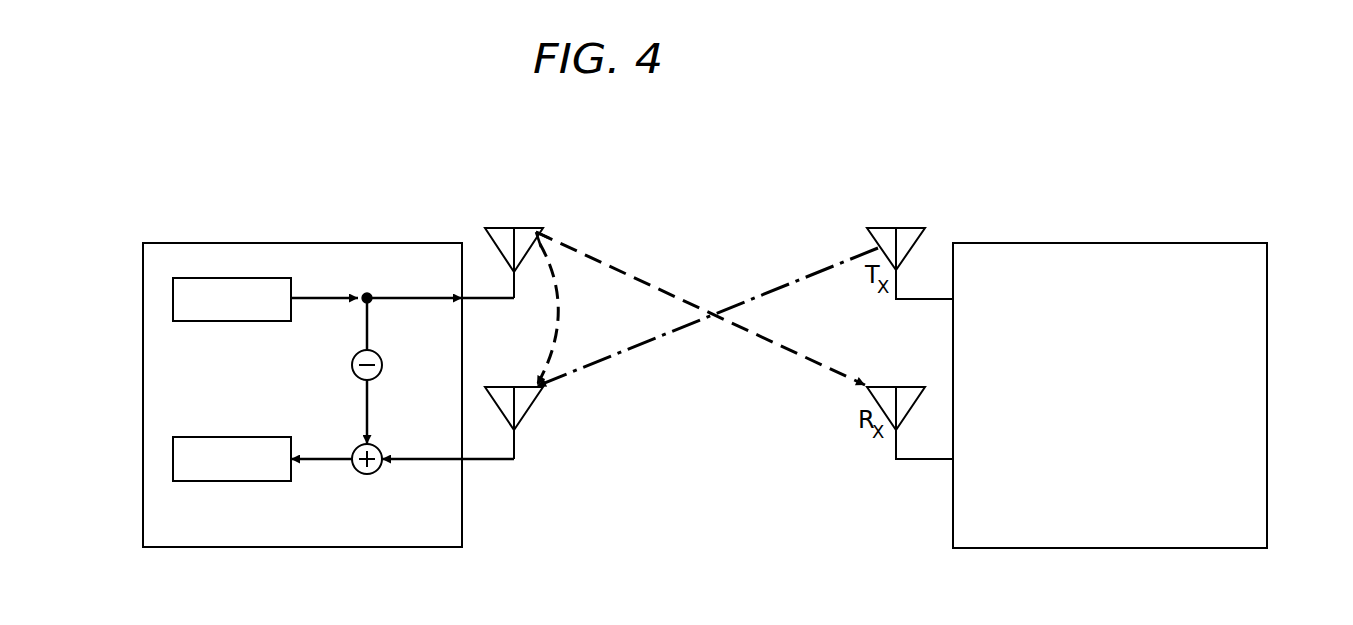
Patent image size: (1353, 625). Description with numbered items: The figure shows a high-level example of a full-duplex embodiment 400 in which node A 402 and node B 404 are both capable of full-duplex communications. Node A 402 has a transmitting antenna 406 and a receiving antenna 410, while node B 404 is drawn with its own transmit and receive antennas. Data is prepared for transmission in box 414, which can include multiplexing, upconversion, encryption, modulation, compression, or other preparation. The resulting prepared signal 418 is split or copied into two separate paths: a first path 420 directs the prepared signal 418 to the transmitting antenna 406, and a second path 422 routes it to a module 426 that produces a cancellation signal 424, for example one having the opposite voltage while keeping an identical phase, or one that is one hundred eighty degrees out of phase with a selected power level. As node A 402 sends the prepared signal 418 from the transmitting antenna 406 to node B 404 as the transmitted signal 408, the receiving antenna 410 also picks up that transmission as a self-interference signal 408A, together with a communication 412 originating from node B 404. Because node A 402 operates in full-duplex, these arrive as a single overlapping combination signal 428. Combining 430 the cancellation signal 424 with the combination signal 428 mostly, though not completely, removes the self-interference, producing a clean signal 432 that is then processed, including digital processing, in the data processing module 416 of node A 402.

The full-duplex embodiment 400 is at (757, 178).
The node A 402 is at (143, 510).
The node B 404 is at (1268, 408).
The transmitting antenna 406 is at (500, 228).
The transmitted signal 408 is at (600, 267).
The self-interference signal 408A is at (555, 315).
The receiving antenna 410 is at (507, 387).
The communication 412 is at (652, 347).
The box 414 is at (173, 292).
The data processing module 416 is at (175, 450).
The prepared signal 418 is at (322, 298).
The first path 420 is at (415, 298).
The second path 422 is at (365, 334).
The cancellation signal 424 is at (365, 393).
The module 426 is at (383, 366).
The combination signal 428 is at (432, 465).
The combining 430 is at (370, 476).
The clean signal 432 is at (322, 465).